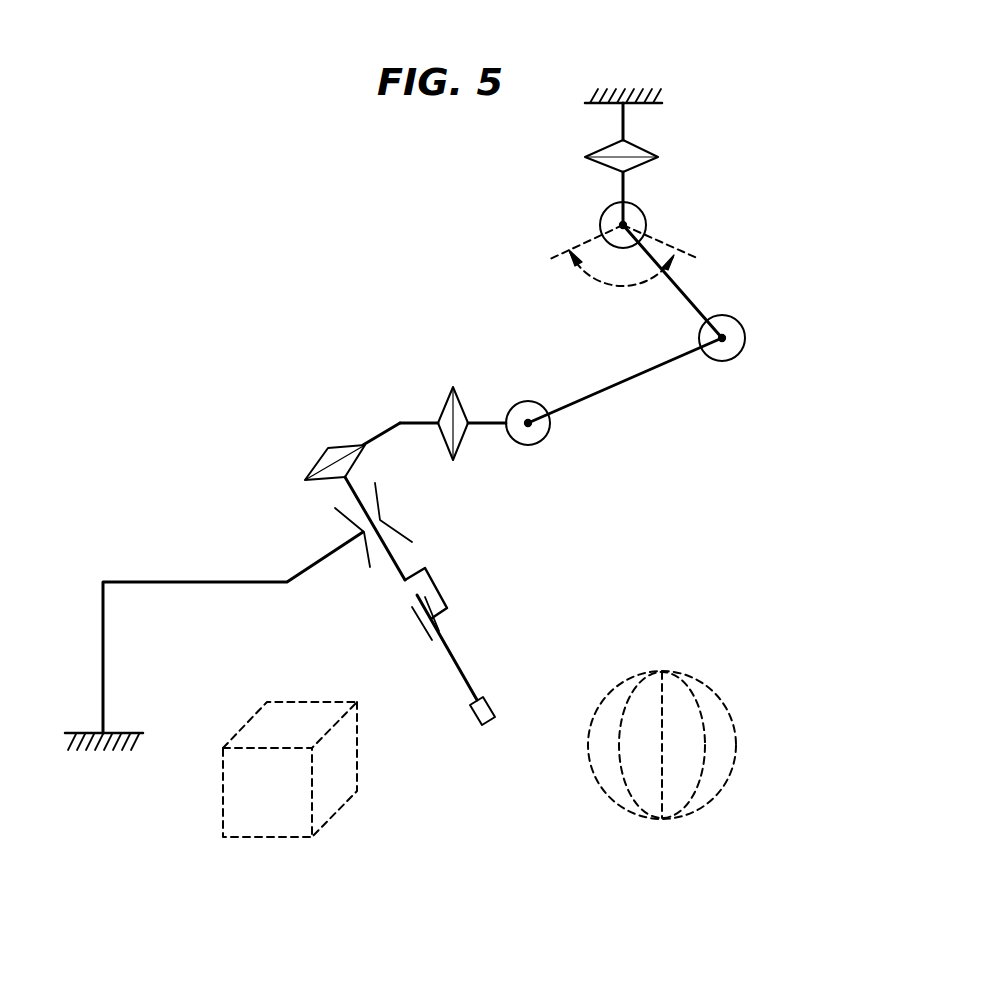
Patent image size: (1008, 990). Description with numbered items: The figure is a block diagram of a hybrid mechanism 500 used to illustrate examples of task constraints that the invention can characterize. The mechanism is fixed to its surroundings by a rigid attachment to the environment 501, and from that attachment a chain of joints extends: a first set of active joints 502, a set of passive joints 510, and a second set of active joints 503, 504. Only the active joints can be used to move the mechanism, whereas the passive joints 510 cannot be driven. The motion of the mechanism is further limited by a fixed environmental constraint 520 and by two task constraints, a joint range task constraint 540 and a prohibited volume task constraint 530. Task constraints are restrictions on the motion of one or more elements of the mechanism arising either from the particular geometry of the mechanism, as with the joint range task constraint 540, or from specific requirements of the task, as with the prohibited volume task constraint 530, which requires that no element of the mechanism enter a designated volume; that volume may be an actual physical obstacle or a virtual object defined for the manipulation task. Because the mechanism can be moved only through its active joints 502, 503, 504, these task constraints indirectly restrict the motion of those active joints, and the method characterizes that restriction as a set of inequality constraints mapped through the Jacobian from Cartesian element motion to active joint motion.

The hybrid mechanism 500 is at (218, 191).
The rigid attachment to the environment 501 is at (630, 108).
The set of active joints 502 is at (765, 142).
The active joint 503 is at (344, 446).
The active joint 504 is at (440, 622).
The set of passive joints 510 is at (558, 371).
The fixed environmental constraint 520 is at (186, 582).
The prohibited volume task constraint 530 is at (357, 797).
The joint range task constraint 540 is at (583, 242).